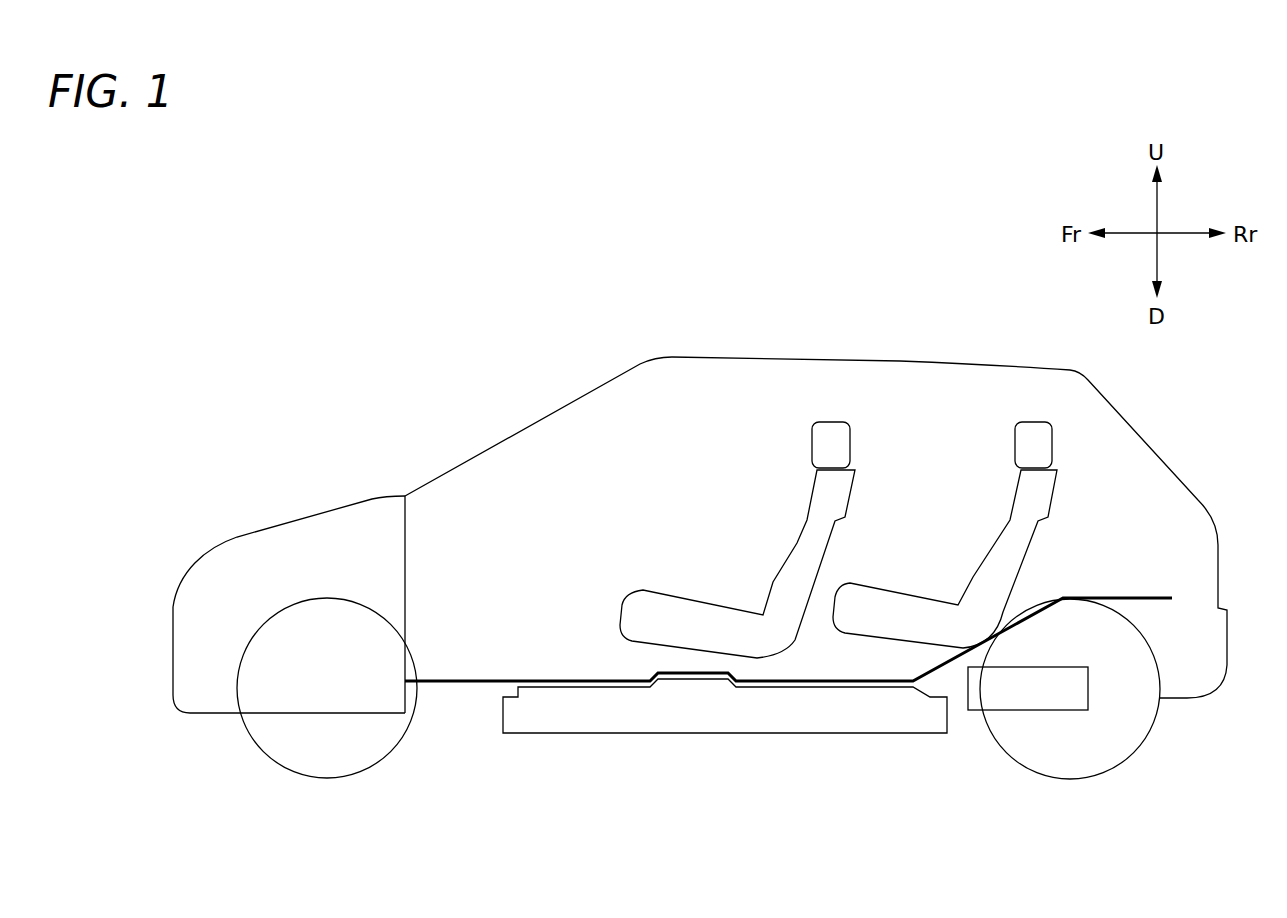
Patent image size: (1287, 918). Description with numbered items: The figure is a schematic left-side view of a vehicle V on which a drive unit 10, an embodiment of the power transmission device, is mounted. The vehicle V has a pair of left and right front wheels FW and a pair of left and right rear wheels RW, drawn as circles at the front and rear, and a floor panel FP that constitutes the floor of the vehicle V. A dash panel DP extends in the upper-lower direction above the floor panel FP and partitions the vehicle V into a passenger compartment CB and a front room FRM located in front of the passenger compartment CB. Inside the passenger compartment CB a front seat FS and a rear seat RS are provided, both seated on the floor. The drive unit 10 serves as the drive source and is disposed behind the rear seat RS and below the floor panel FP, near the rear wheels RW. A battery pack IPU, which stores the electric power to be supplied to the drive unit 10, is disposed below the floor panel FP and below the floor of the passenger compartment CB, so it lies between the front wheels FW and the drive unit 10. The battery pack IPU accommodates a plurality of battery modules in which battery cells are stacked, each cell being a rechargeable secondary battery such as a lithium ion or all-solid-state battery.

The vehicle V is at (461, 348).
The front room FRM is at (225, 567).
The dash panel DP is at (400, 558).
The passenger compartment CB is at (722, 426).
The floor panel FP is at (502, 678).
The battery pack IPU is at (536, 745).
The front wheels FW is at (390, 758).
The rear wheels RW is at (1133, 753).
The drive unit 10 is at (1008, 700).
The front seat FS is at (817, 510).
The rear seat RS is at (1023, 510).